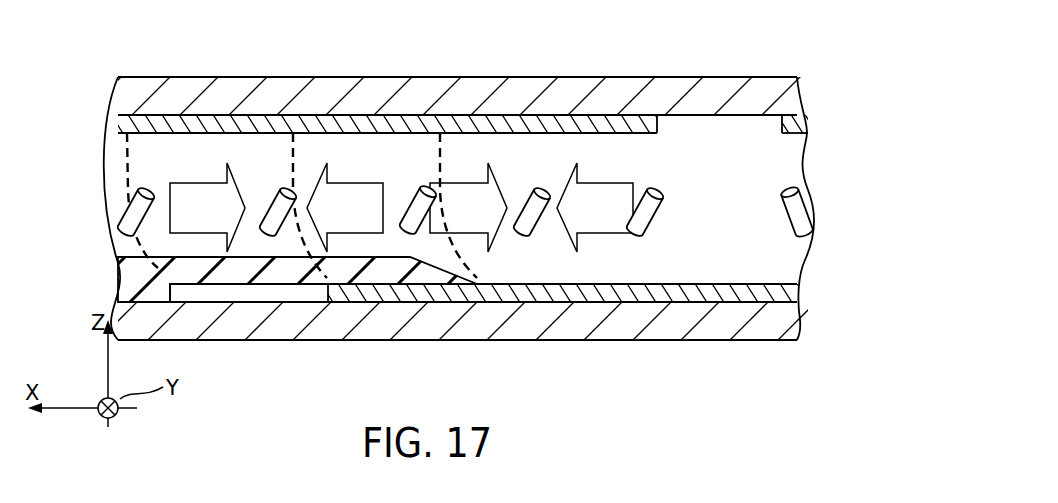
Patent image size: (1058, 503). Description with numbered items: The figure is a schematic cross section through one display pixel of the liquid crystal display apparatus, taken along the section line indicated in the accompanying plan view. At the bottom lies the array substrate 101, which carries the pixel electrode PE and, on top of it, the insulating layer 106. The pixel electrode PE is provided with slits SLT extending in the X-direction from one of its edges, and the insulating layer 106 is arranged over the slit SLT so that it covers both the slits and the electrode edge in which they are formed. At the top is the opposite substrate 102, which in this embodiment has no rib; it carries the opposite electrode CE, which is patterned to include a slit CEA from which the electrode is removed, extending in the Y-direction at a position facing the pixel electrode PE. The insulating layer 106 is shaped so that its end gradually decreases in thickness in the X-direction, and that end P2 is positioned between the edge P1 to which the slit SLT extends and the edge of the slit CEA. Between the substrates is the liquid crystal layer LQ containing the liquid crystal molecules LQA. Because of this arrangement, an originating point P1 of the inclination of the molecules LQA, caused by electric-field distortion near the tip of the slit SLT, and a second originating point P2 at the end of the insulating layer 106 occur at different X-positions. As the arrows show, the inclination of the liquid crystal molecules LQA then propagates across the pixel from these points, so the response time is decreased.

The opposite substrate 102 is at (777, 76).
The opposite electrode CE is at (470, 128).
The slit CEA is at (705, 125).
The liquid crystal layer LQ is at (145, 162).
The liquid crystal molecules LQA is at (123, 228).
The insulating layer 106 is at (373, 272).
The slit SLT is at (247, 293).
The edge P1 is at (313, 282).
The end P2 is at (480, 284).
The pixel electrode PE is at (633, 293).
The array substrate 101 is at (764, 348).